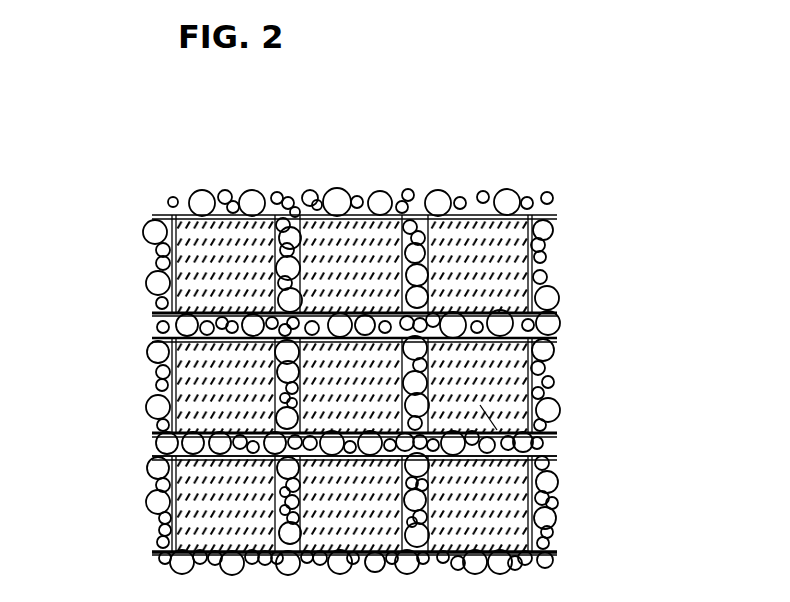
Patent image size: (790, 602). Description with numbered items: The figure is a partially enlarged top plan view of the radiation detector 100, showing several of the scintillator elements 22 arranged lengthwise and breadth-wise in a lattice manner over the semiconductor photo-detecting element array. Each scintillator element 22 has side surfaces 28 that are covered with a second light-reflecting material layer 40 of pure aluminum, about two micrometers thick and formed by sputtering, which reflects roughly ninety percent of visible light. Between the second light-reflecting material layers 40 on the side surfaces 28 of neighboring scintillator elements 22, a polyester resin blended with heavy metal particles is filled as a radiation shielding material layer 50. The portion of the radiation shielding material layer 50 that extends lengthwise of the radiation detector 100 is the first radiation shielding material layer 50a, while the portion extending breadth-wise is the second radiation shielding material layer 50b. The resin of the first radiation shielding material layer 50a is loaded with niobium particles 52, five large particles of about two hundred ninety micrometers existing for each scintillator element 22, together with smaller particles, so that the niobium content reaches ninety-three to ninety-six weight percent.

The radiation detector 100 is at (48, 138).
The radiation shielding material layer 50 is at (655, 250).
The first radiation shielding material layer 50a is at (430, 255).
The second radiation shielding material layer 50b is at (480, 318).
The second light-reflecting material layer 40 is at (530, 390).
The scintillator element 22 is at (508, 453).
The side surfaces 28 is at (467, 540).
The niobium particles 52 is at (275, 393).